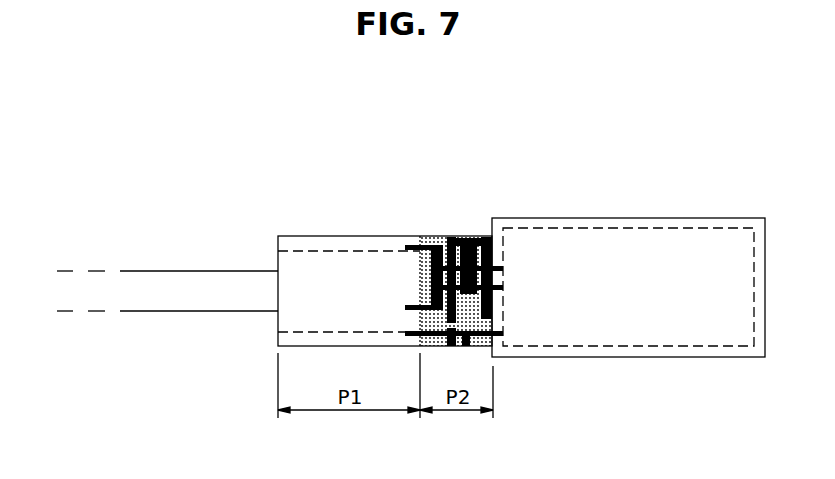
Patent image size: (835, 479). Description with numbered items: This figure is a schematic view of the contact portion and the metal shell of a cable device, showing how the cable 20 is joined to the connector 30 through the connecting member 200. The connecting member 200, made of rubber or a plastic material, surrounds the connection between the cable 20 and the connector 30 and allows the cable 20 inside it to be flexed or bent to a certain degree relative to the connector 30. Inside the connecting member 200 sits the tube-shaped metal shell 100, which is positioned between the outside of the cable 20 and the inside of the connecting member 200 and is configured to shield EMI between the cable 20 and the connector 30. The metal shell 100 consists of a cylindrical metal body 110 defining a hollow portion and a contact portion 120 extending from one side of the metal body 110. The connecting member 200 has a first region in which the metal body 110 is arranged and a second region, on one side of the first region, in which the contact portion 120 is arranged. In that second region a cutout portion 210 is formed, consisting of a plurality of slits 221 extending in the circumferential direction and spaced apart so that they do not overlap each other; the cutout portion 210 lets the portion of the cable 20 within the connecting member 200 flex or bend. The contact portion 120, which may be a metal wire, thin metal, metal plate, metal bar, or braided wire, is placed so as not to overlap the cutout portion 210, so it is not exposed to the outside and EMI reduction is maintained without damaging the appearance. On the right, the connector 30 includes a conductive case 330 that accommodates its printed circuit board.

The metal shell 100 is at (382, 149).
The cable 20 is at (201, 269).
The connecting member 200 is at (303, 235).
The metal body 110 is at (357, 250).
The contact portion 120 is at (412, 246).
The slit 221 is at (452, 246).
The cutout portion 210 is at (470, 242).
The connector 30 is at (674, 196).
The conductive case 330 is at (598, 228).